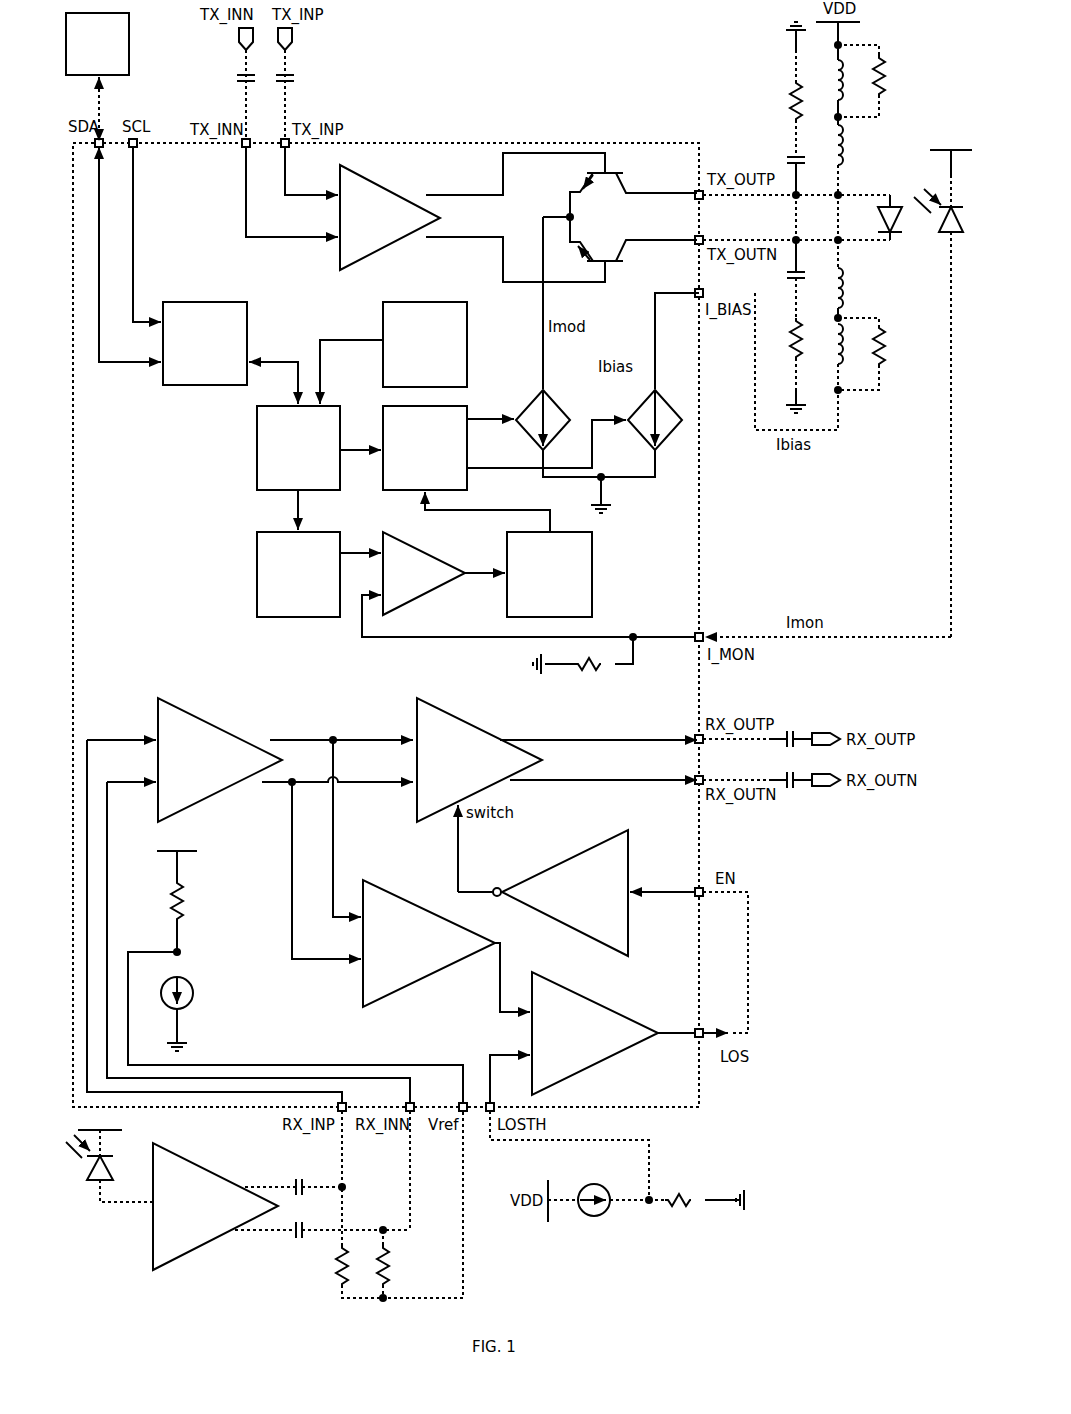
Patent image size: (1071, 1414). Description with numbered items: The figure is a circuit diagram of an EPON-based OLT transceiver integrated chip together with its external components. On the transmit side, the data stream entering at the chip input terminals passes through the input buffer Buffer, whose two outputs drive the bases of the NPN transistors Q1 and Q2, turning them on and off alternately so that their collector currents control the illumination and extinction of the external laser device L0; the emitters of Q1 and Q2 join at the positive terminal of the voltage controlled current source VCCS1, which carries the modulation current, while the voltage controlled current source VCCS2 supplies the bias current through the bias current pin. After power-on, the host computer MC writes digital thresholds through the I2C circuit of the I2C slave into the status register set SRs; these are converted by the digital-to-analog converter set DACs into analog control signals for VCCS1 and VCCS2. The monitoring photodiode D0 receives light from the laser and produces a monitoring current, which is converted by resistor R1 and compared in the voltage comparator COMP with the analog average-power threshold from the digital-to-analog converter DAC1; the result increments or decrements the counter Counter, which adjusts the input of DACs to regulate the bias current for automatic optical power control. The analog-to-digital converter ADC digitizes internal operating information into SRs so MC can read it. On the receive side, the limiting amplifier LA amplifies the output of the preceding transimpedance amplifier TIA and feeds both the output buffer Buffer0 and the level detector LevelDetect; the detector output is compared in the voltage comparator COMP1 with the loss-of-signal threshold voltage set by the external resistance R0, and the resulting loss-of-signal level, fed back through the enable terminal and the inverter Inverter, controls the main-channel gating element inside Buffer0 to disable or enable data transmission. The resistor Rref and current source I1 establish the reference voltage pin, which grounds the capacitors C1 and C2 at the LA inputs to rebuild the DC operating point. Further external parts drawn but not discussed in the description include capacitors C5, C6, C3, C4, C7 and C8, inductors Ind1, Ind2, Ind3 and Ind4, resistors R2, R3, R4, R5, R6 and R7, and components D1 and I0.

The host computer MC is at (97, 44).
The capacitor C5 is at (297, 94).
The capacitor C6 is at (233, 94).
The input buffer Buffer is at (390, 217).
The NPN transistor Q1 is at (633, 191).
The NPN transistor Q2 is at (633, 239).
The voltage controlled current source VCCS1 is at (559, 333).
The voltage controlled current source VCCS2 is at (648, 377).
The I²C circuit of the I²C slave I2C is at (205, 343).
The analog-to-digital converter ADC is at (425, 344).
The status register set SRs is at (298, 448).
The digital-to-analog converter set DACs is at (425, 448).
The digital-to-analog converter DAC1 is at (298, 574).
The voltage comparator COMP is at (424, 573).
The counter Counter is at (549, 574).
The resistor R1 is at (585, 653).
The inductor Ind1 is at (822, 80).
The inductor Ind2 is at (821, 145).
The inductor Ind3 is at (822, 279).
The inductor Ind4 is at (822, 357).
The resistor R2 is at (787, 89).
The resistor R3 is at (787, 365).
The resistor R6 is at (874, 81).
The resistor R7 is at (874, 354).
The capacitor C3 is at (785, 173).
The capacitor C4 is at (785, 279).
The laser device L0 is at (877, 217).
The monitoring photodiode D0 is at (943, 382).
The limiting amplifier LA is at (220, 760).
The output buffer Buffer0 is at (479, 760).
The inverter Inverter is at (543, 893).
The operational amplifier Level Detect LevelDetect is at (429, 943).
The voltage comparator COMP1 is at (595, 1033).
The resistor Rref is at (187, 891).
The current source I1 is at (187, 1014).
The photodiode D1 is at (109, 1156).
The transimpedance amplifier TIA is at (215, 1206).
The capacitor C1 is at (293, 1177).
The capacitor C2 is at (322, 1242).
The resistor R4 is at (347, 1271).
The resistor R5 is at (420, 1204).
The current source I0 is at (598, 1191).
The external resistance R0 is at (696, 1190).
The capacitor C7 is at (771, 730).
The capacitor C8 is at (771, 789).